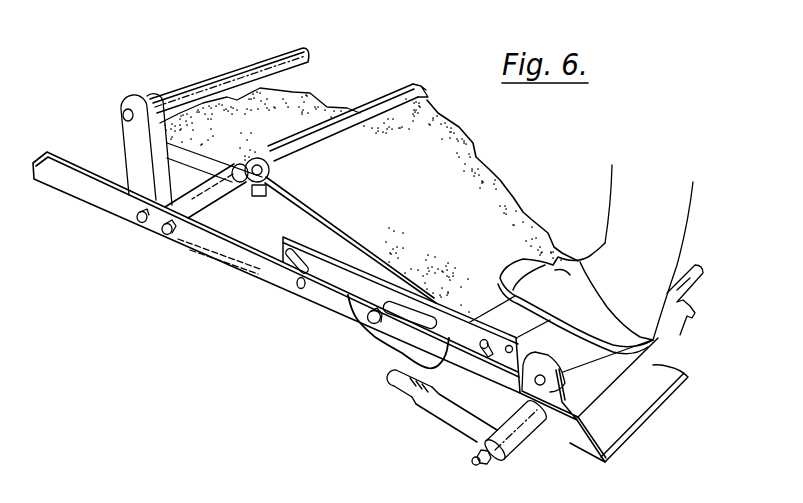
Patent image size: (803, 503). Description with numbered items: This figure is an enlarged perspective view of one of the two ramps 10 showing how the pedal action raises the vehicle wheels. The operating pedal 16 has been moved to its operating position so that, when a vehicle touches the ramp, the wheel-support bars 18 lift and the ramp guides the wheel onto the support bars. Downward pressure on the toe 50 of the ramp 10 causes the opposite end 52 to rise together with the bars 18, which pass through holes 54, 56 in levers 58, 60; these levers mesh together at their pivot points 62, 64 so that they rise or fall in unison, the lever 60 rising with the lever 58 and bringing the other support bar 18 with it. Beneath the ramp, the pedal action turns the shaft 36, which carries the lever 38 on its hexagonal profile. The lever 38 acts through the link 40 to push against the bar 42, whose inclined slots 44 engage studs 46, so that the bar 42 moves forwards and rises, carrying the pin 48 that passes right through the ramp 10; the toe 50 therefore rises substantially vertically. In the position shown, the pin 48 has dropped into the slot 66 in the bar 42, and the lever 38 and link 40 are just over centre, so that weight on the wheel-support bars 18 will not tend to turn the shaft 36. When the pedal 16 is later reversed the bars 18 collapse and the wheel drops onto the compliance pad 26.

The ramp 10 is at (490, 173).
The operating pedal 16 is at (417, 398).
The wheel-support bar 18 is at (361, 50).
The compliance pad 26 is at (237, 123).
The shaft 36 is at (473, 461).
The lever 38 is at (552, 400).
The link 40 is at (527, 358).
The bar 42 is at (347, 280).
The inclined slot 44 is at (483, 348).
The stud 46 is at (500, 382).
The pin 48 is at (368, 320).
The toe of the ramp 50 is at (560, 250).
The opposite end of the ramp 52 is at (414, 110).
The hole in lever 54 is at (257, 196).
The hole in lever 56 is at (122, 114).
The lever 58 is at (208, 216).
The lever 60 is at (138, 180).
The pivot point 62 is at (165, 231).
The pivot point 64 is at (139, 221).
The slot in the bar 66 is at (377, 338).